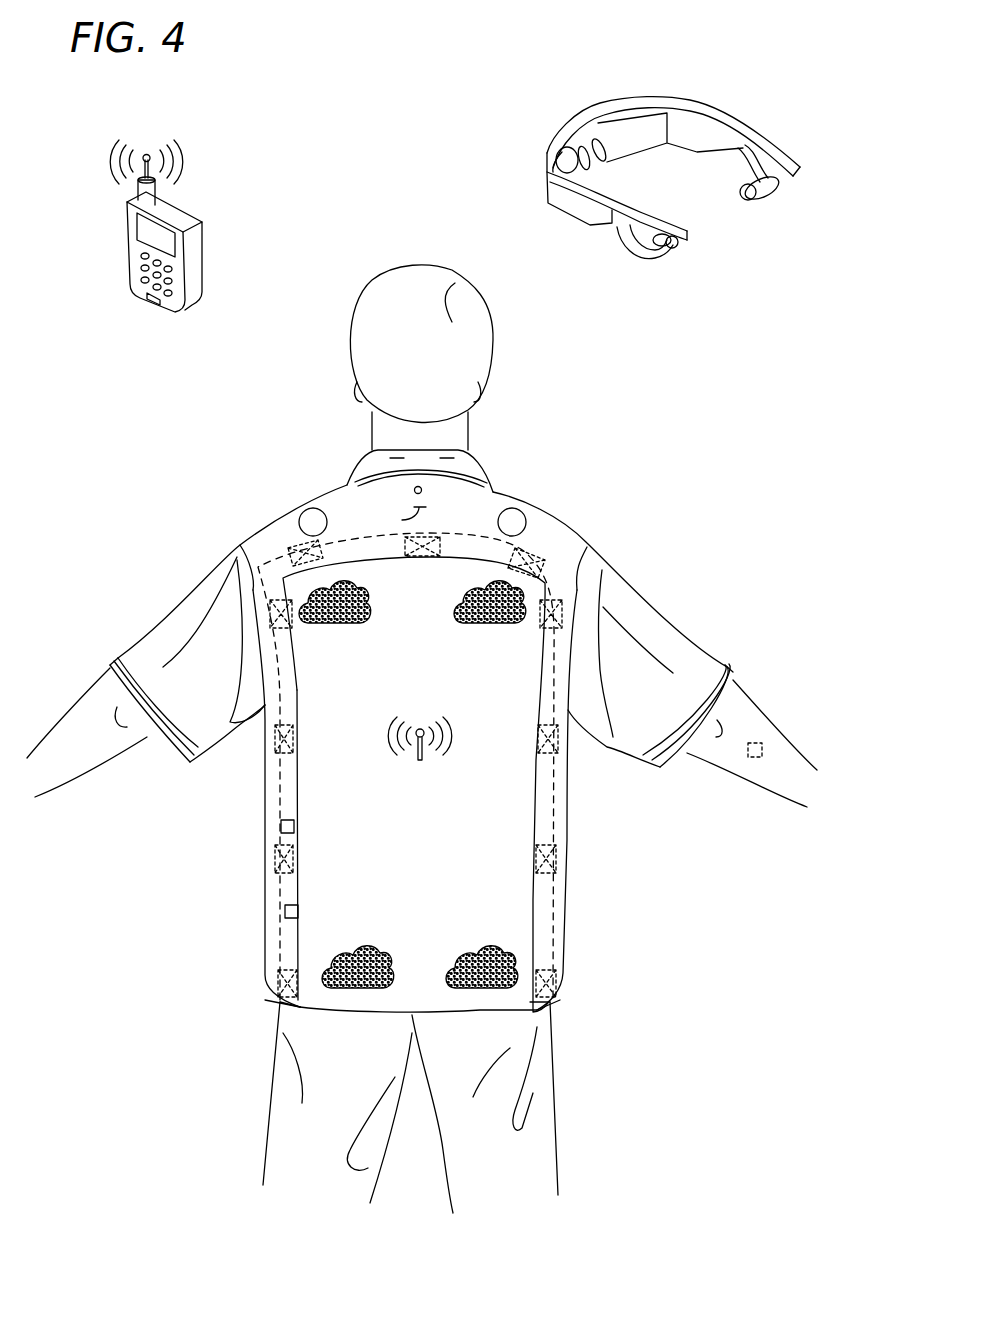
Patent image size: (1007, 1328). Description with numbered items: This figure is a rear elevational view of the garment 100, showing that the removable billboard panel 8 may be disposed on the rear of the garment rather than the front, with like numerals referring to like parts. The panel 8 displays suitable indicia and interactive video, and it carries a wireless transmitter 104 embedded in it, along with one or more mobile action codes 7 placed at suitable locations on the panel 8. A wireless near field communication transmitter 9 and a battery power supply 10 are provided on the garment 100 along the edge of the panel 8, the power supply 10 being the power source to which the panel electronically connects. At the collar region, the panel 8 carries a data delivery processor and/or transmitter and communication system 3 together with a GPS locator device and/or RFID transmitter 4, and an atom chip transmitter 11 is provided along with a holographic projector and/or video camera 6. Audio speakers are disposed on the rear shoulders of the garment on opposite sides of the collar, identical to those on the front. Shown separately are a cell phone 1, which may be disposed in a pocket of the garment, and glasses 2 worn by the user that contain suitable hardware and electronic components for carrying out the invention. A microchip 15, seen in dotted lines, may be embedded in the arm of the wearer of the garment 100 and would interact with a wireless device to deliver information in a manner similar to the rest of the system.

The cell phone 1 is at (130, 243).
The glasses 2 is at (690, 235).
The data delivery processor and/or transmitter and communication system 3 is at (396, 456).
The GPS locator device and/or RFID transmitter 4 is at (447, 456).
The holographic projector and/or video camera 6 is at (406, 518).
The mobile action codes 7 is at (300, 610).
The removable billboard panel 8 is at (478, 880).
The wireless near field communication transmitter 9 is at (278, 828).
The battery power supply 10 is at (283, 912).
The atom chip transmitter 11 is at (422, 490).
The microchip 15 is at (754, 760).
The garment 100 is at (568, 775).
The wireless transmitter 104 is at (447, 737).